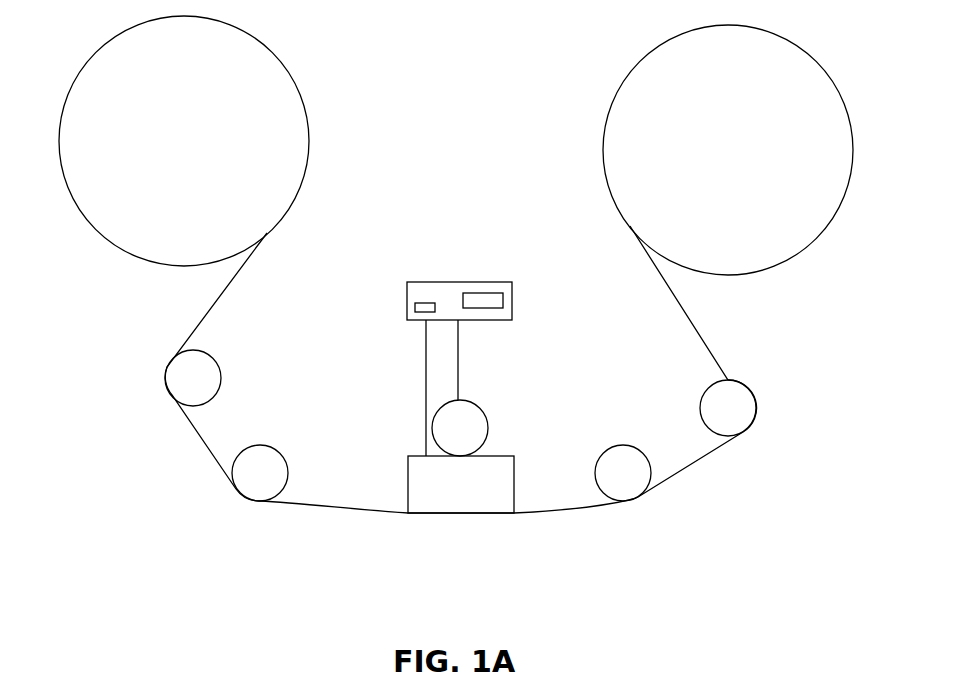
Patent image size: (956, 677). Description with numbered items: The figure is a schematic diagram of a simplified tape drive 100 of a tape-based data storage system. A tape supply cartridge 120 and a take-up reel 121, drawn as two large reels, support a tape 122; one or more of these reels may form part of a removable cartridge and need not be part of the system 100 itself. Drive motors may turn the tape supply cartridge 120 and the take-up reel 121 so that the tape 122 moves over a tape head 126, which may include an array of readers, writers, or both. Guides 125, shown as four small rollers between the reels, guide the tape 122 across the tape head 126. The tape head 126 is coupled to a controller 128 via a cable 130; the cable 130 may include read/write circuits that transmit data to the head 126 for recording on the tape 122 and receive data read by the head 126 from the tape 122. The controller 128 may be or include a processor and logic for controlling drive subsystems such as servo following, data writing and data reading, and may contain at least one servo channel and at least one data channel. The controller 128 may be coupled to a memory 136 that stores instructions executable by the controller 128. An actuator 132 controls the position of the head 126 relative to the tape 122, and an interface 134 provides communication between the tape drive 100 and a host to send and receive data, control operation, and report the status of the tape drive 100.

The tape drive 100 is at (157, 322).
The tape supply cartridge 120 is at (306, 112).
The take-up reel 121 is at (807, 250).
The tape 122 is at (337, 508).
The guides 125 is at (260, 445).
The tape head 126 is at (514, 483).
The controller 128 is at (458, 282).
The cable 130 is at (425, 427).
The actuator 132 is at (482, 408).
The interface 134 is at (492, 293).
The memory 136 is at (422, 303).